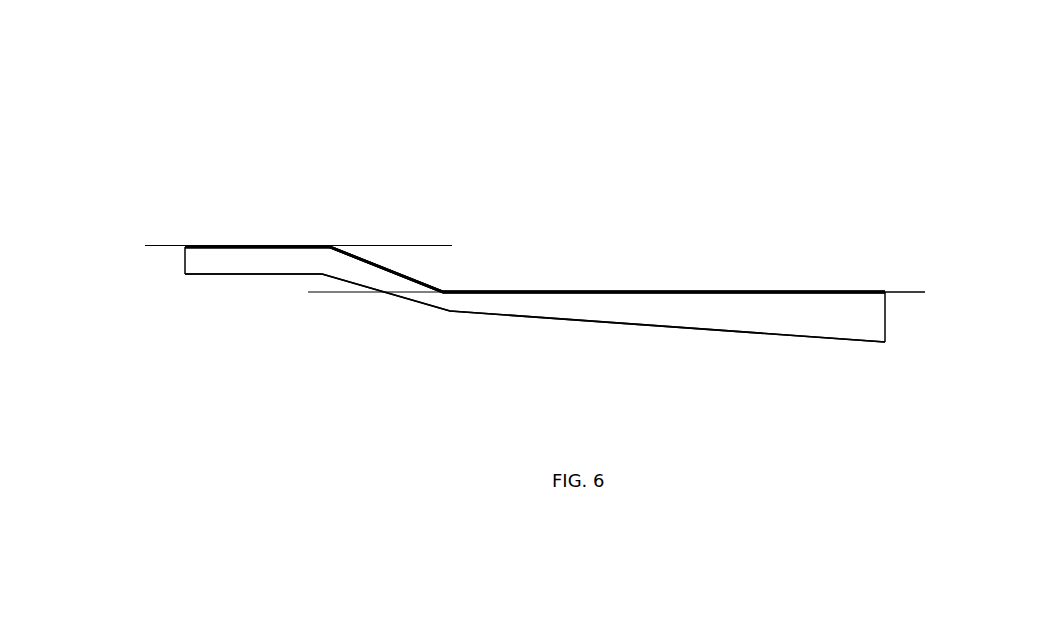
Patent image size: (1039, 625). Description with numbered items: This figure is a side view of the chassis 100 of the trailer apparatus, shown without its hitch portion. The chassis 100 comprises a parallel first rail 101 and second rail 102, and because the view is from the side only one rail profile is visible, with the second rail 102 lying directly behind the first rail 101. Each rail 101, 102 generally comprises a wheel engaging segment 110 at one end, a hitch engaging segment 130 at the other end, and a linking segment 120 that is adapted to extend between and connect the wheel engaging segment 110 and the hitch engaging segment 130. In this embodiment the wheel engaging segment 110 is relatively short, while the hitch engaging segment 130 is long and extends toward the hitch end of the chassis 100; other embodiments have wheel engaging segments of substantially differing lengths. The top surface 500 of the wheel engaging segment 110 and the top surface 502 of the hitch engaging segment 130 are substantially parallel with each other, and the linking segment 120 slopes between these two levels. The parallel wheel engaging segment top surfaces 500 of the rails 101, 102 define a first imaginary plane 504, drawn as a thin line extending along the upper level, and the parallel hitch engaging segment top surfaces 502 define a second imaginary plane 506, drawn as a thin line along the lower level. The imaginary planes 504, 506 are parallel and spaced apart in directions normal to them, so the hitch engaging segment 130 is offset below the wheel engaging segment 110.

The chassis 100 is at (595, 128).
The first rail 101 is at (703, 305).
The second rail 102 is at (757, 313).
The wheel engaging segment 110 is at (216, 265).
The linking segment 120 is at (385, 280).
The hitch engaging segment 130 is at (655, 312).
The top surface of the wheel engaging segment 500 is at (233, 245).
The top surface of the hitch engaging segment 502 is at (592, 290).
The first imaginary plane 504 is at (405, 243).
The second imaginary plane 506 is at (900, 288).